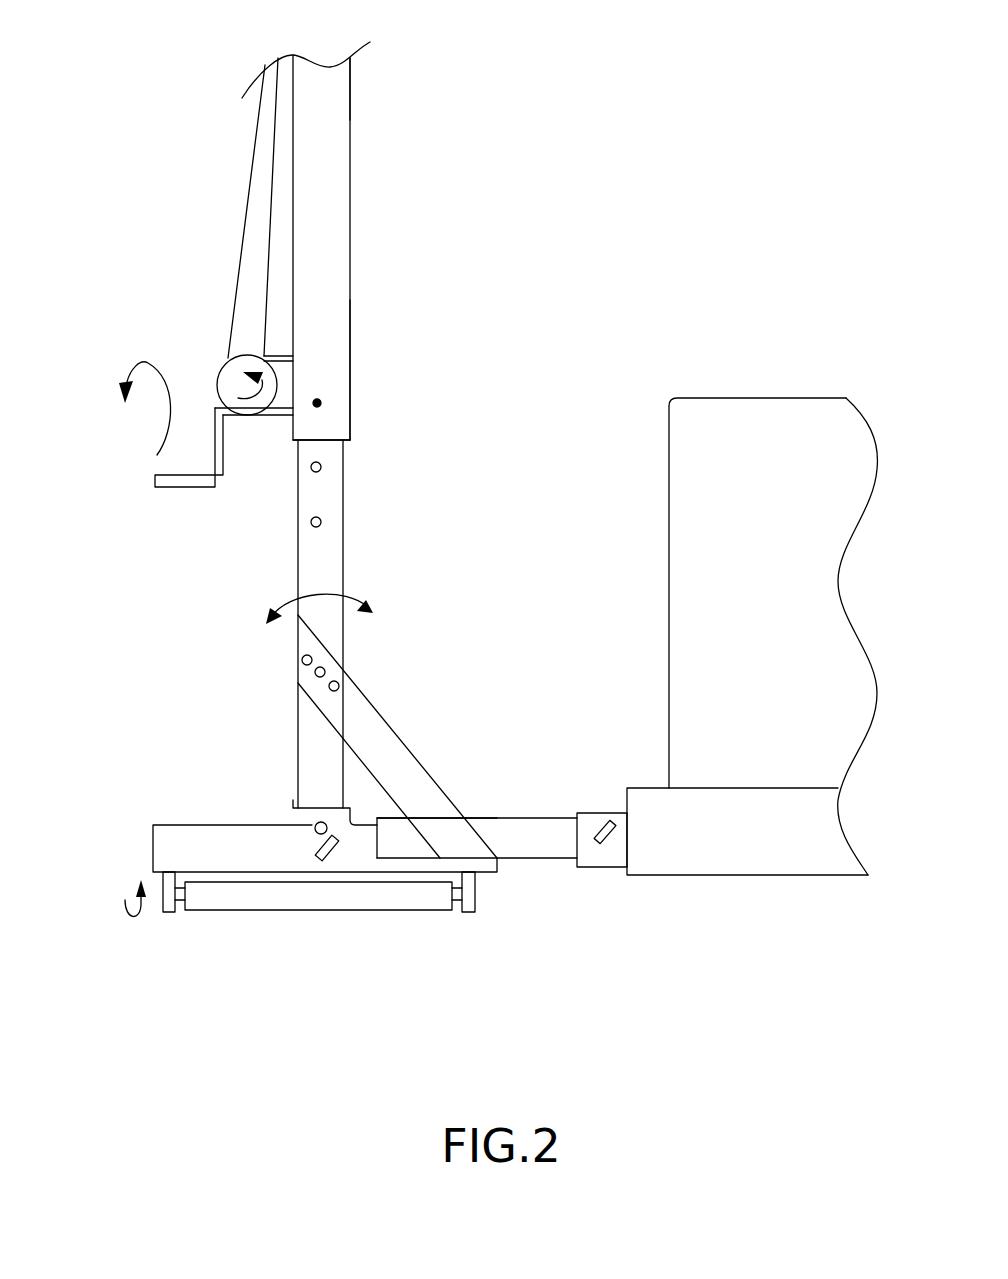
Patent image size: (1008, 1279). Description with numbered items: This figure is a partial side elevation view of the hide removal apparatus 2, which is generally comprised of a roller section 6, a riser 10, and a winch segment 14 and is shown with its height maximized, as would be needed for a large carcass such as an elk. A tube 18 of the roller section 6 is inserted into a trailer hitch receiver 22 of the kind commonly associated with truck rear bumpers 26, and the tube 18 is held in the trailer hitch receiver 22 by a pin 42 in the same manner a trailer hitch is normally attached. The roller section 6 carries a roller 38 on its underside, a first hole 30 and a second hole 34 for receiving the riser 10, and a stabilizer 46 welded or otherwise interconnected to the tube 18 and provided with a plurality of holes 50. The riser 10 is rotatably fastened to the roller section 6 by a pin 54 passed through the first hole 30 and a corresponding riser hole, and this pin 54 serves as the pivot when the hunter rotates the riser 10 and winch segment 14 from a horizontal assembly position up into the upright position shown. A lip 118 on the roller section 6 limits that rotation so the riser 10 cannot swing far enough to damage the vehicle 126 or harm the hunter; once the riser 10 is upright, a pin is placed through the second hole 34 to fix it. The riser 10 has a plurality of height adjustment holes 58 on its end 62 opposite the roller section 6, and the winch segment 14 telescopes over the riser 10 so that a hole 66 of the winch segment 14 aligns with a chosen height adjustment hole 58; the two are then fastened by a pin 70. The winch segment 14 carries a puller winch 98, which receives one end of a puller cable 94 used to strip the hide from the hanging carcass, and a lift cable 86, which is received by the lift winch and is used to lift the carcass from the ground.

The hide removal apparatus 2 is at (578, 245).
The roller section 6 is at (120, 805).
The riser 10 is at (370, 545).
The winch segment 14 is at (350, 280).
The tube 18 is at (505, 842).
The trailer hitch receiver 22 is at (605, 858).
The truck rear bumper 26 is at (772, 840).
The first hole 30 is at (335, 862).
The second hole 34 is at (310, 827).
The roller 38 is at (298, 898).
The pin 42 is at (598, 830).
The stabilizer 46 is at (390, 745).
The holes 50 is at (325, 670).
The pin 54 is at (312, 857).
The height adjustment holes 58 is at (323, 522).
The end 62 is at (293, 440).
The hole 66 is at (325, 373).
The pin 70 is at (321, 401).
The lift cable 86 is at (248, 183).
The puller cable 94 is at (273, 172).
The puller winch 98 is at (220, 368).
The lip 118 is at (373, 822).
The vehicle 126 is at (724, 450).